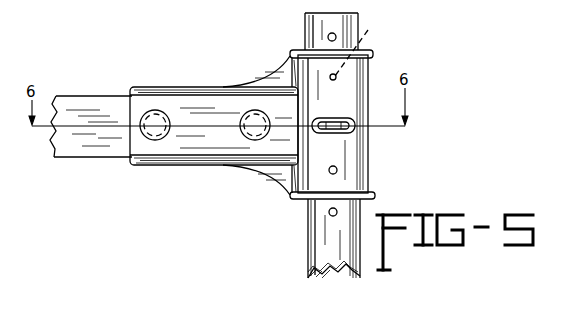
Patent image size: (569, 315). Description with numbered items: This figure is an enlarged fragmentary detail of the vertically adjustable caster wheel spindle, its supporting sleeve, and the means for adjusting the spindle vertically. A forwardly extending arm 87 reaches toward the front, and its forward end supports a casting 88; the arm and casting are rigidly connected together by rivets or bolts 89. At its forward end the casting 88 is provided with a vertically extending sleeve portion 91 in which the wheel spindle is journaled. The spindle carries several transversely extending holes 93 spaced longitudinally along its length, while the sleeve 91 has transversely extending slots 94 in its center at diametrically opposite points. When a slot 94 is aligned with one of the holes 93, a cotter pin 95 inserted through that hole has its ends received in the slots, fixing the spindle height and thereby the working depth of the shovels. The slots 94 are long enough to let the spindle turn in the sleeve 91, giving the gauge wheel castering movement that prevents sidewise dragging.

The forwardly extending arm 87 is at (105, 107).
The casting 88 is at (222, 158).
The rivets or bolts 89 is at (248, 117).
The sleeve portion 91 is at (366, 179).
The transversely extending holes 93 is at (336, 37).
The transversely extending slots 94 is at (355, 129).
The cotter pin 95 is at (336, 120).